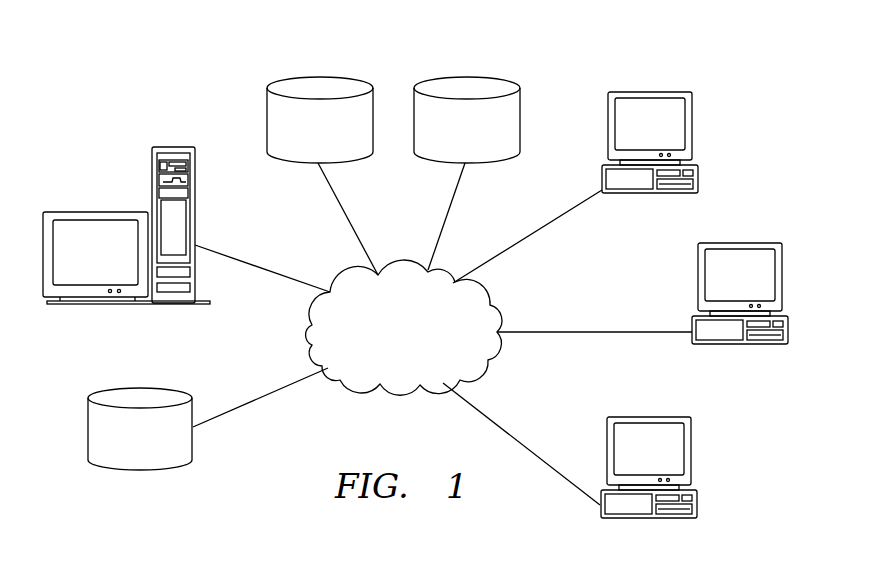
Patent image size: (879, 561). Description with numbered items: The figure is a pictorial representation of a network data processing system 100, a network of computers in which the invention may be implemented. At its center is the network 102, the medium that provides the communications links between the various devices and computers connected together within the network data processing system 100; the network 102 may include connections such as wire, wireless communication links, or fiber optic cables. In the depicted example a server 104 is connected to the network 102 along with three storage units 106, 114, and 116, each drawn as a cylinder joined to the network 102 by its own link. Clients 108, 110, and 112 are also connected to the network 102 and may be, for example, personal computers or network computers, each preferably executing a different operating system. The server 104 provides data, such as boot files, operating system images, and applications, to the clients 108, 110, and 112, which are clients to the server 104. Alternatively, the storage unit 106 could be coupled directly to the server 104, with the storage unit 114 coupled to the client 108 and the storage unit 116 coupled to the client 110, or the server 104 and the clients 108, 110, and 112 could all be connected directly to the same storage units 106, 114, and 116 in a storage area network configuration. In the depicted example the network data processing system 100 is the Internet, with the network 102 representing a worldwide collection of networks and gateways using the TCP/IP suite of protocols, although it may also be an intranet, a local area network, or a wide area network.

The network data processing system 100 is at (174, 95).
The network 102 is at (383, 357).
The server 104 is at (152, 170).
The storage unit 106 is at (88, 428).
The client 108 is at (692, 133).
The client 110 is at (782, 283).
The client 112 is at (692, 458).
The storage unit 114 is at (267, 120).
The storage unit 116 is at (521, 120).